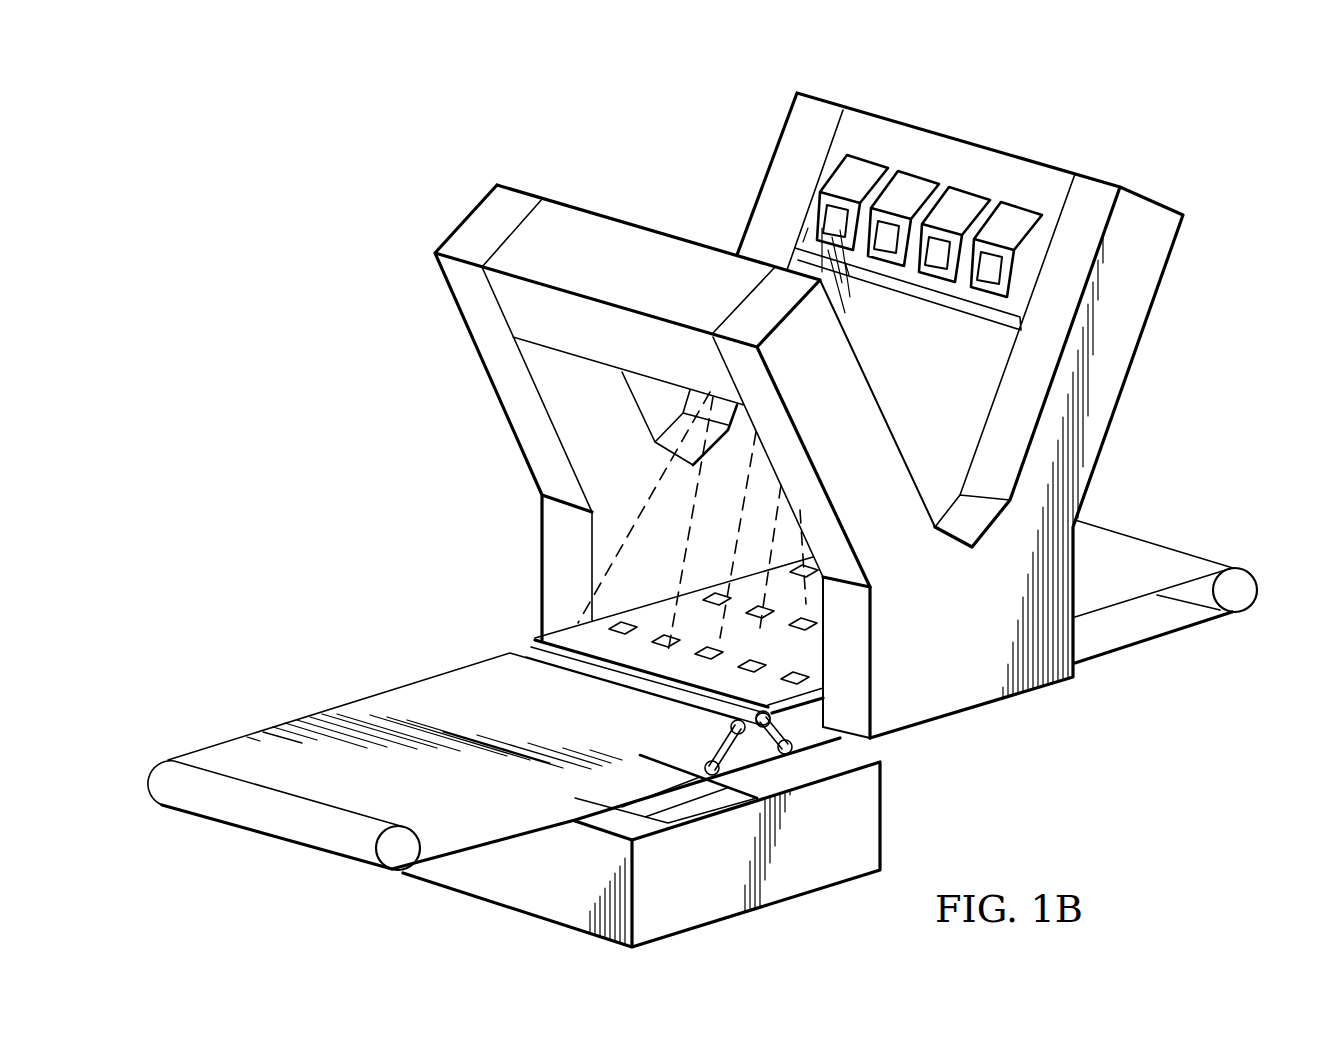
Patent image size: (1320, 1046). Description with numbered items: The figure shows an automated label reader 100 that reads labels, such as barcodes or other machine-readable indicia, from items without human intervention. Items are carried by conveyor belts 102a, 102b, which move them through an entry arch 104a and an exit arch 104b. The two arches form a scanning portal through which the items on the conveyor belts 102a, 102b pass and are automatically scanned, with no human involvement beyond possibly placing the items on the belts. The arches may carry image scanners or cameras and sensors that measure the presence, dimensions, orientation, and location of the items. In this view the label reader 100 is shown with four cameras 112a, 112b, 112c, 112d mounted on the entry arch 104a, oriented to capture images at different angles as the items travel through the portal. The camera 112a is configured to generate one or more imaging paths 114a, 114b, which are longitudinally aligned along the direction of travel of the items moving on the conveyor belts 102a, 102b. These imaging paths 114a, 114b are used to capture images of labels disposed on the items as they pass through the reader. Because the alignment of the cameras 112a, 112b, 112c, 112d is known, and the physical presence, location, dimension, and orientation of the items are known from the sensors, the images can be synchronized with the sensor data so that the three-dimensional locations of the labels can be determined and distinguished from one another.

The automated label reader 100 is at (702, 501).
The conveyor belt 102a is at (1160, 542).
The conveyor belt 102b is at (385, 690).
The entry arch 104a is at (928, 396).
The exit arch 104b is at (699, 448).
The camera 112a is at (858, 175).
The camera 112b is at (908, 187).
The camera 112c is at (960, 203).
The camera 112d is at (1012, 218).
The imaging path 114a is at (652, 500).
The imaging path 114b is at (826, 600).